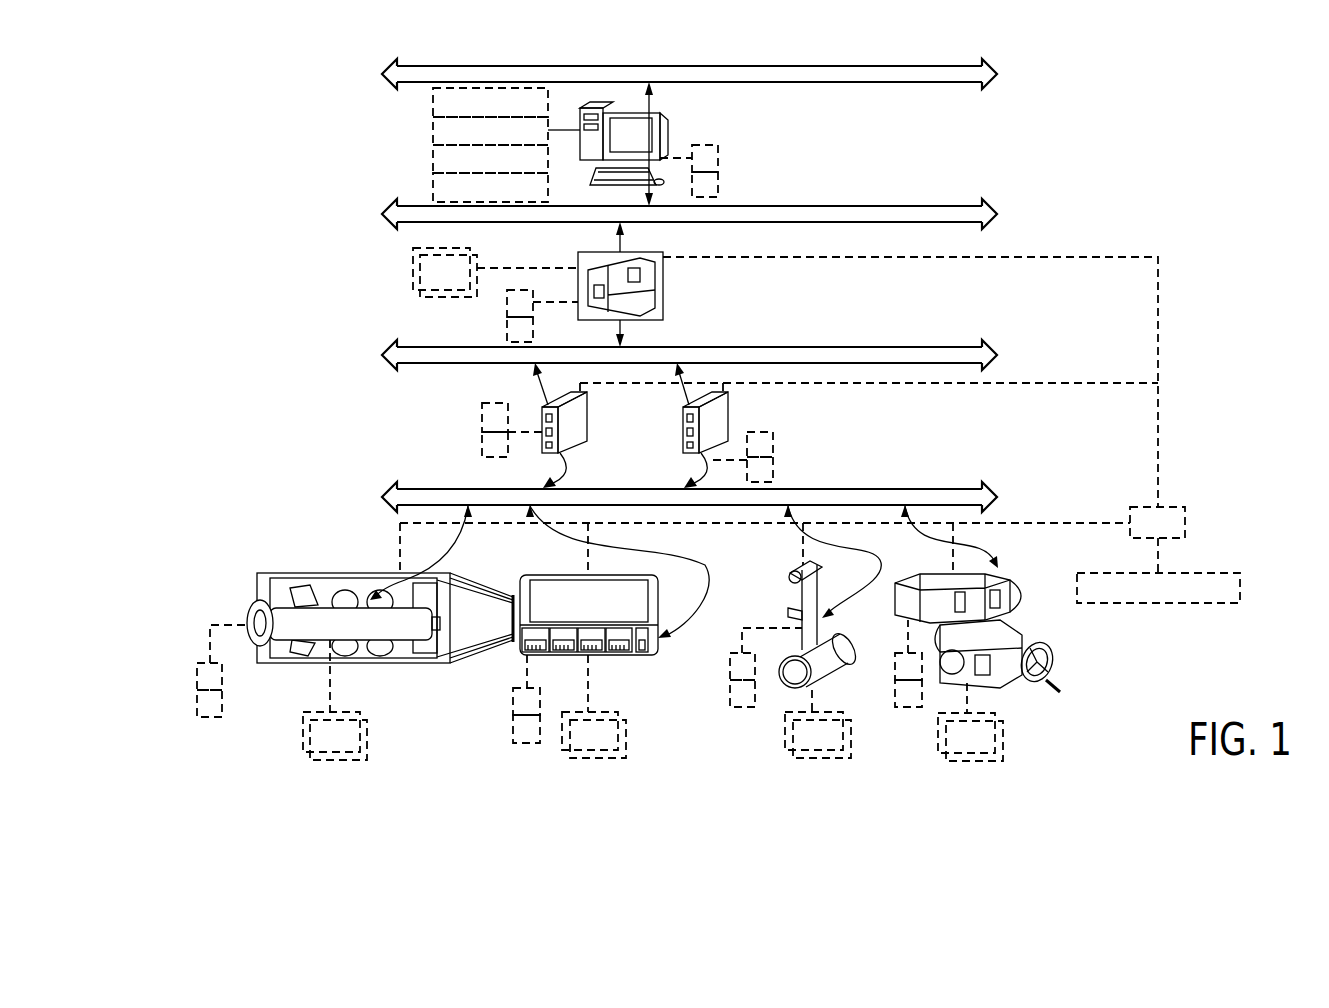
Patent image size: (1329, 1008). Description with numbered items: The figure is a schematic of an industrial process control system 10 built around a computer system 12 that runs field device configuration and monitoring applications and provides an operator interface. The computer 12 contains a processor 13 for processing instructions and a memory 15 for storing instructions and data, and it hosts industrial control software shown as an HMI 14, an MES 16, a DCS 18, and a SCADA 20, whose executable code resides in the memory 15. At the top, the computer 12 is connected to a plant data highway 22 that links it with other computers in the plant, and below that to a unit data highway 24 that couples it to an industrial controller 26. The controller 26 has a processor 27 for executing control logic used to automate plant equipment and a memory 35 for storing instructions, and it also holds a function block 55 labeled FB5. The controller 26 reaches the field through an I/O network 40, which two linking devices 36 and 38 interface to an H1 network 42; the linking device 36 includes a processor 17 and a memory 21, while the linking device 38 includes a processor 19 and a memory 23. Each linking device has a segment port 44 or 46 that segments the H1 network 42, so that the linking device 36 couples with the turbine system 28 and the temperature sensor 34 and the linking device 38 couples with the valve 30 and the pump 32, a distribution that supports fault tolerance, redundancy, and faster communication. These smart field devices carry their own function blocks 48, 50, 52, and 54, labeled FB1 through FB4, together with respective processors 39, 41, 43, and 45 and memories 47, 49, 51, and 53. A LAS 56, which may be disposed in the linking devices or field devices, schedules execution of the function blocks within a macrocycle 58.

The industrial process control system 10 is at (1222, 67).
The computer system 12 is at (668, 128).
The processor 13 is at (718, 150).
The human-machine interface (HMI) software 14 is at (433, 104).
The memory 15 is at (718, 180).
The manufacturing execution system (MES) 16 is at (433, 132).
The processor 17 is at (492, 403).
The distributed control system (DCS) 18 is at (433, 160).
The processor 19 is at (773, 445).
The supervisor control and data acquisition (SCADA) system 20 is at (433, 188).
The memory 21 is at (482, 444).
The plant data highway 22 is at (997, 68).
The memory 23 is at (773, 468).
The unit data highway 24 is at (997, 208).
The industrial controller 26 is at (663, 287).
The processor 27 is at (507, 300).
The turbine system 28 is at (410, 677).
The valve 30 is at (826, 682).
The pump 32 is at (1052, 670).
The temperature sensor 34 is at (618, 655).
The memory 35 is at (507, 328).
The linking device 36 is at (585, 425).
The linking device 38 is at (728, 425).
The processor 39 is at (197, 672).
The I/O network 40 is at (997, 358).
The processor 41 is at (730, 664).
The H1 network 42 is at (997, 494).
The processor 43 is at (895, 664).
The segment port 44 is at (530, 458).
The processor 45 is at (540, 704).
The segment port 46 is at (671, 458).
The memory 47 is at (212, 717).
The function block FB1 48 is at (378, 770).
The memory 49 is at (743, 707).
The function block FB2 50 is at (639, 770).
The memory 51 is at (910, 707).
The function block FB3 52 is at (861, 773).
The memory 53 is at (516, 743).
The function block FB4 54 is at (1016, 773).
The function block FB5 55 is at (413, 268).
The LAS 56 is at (1185, 524).
The macrocycle 58 is at (1240, 590).